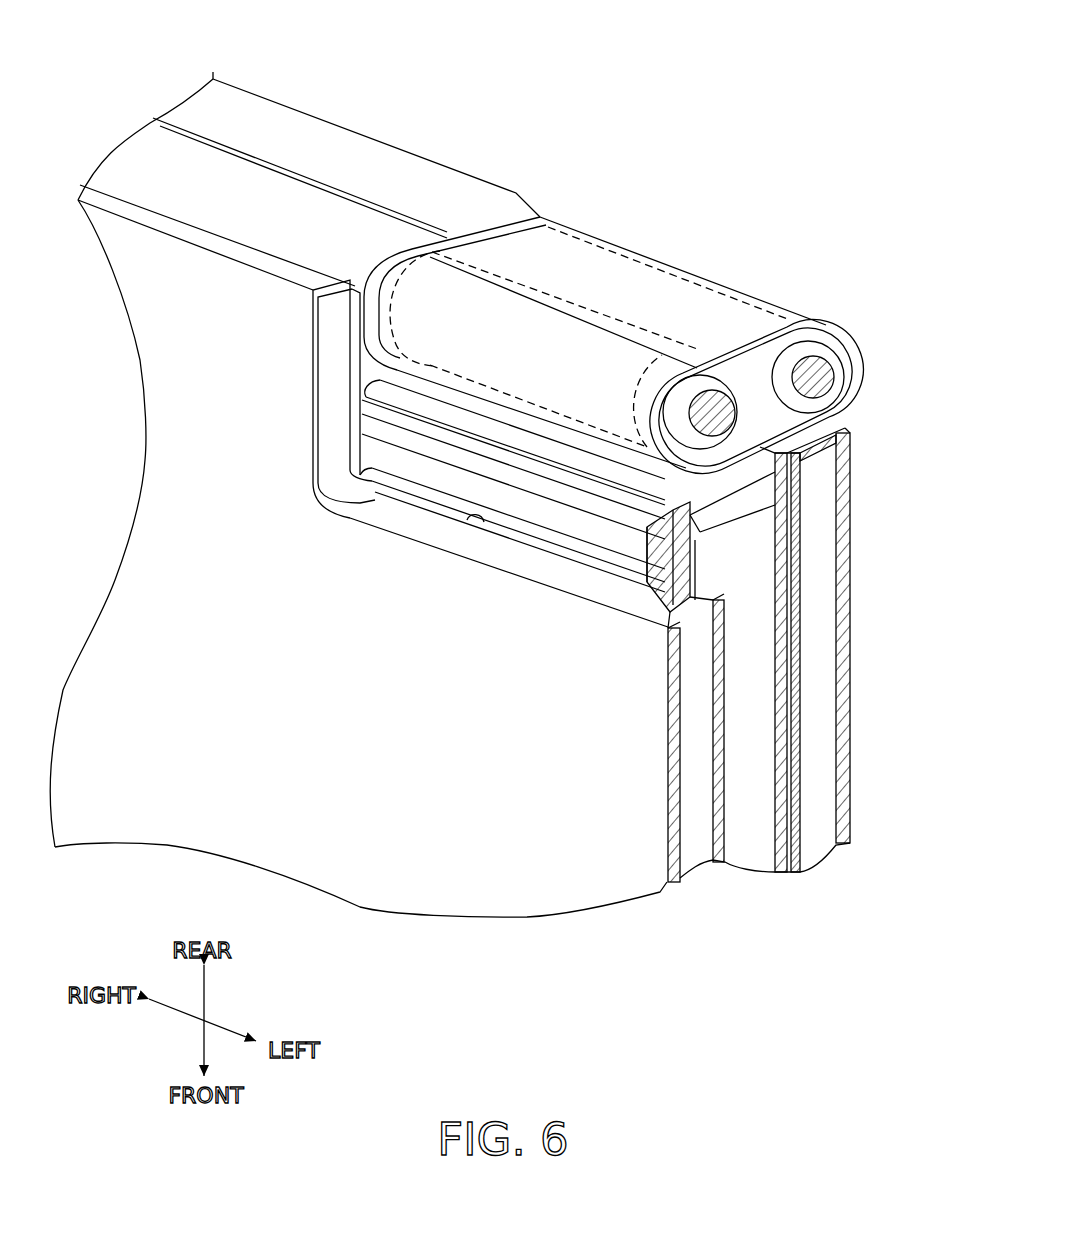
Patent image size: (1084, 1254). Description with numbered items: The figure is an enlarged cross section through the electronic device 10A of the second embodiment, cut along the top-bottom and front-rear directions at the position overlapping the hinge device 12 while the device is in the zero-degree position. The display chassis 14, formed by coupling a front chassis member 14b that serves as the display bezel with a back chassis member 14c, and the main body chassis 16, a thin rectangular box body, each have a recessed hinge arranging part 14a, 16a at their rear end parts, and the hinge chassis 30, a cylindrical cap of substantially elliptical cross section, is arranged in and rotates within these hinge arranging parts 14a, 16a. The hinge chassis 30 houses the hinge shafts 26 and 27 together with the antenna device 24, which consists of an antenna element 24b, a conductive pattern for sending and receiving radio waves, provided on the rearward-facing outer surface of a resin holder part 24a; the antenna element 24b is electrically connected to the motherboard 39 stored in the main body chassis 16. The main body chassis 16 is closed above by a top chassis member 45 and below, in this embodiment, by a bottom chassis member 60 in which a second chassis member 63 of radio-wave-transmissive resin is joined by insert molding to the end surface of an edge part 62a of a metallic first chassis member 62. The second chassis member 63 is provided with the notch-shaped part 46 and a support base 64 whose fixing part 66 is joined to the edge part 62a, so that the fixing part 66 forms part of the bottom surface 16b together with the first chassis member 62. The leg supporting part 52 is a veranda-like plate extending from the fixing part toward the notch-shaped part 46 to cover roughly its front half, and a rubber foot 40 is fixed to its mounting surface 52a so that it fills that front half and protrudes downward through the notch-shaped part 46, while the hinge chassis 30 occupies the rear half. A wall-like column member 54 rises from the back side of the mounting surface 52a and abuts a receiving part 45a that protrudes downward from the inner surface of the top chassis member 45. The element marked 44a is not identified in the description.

The electronic device 10A is at (50, 38).
The display chassis 14 is at (213, 112).
The main body chassis 16 is at (137, 152).
The panel joint seam 44a is at (230, 250).
The hinge chassis 30 is at (550, 258).
The antenna device 24 is at (610, 280).
The holder part 24a is at (680, 184).
The antenna element 24b is at (662, 302).
The hinge device 12 is at (745, 252).
The hinge shaft 26 is at (713, 417).
The hinge shaft 27 is at (820, 377).
The hinge arranging part 14a is at (747, 437).
The hinge arranging part 16a is at (750, 492).
The receiving part 45a is at (743, 513).
The column member 54 is at (700, 570).
The support base 64 is at (690, 633).
The second chassis member 63 is at (720, 605).
The first chassis member 62 is at (683, 743).
The bottom chassis member 60 is at (915, 648).
The back chassis member 14c is at (843, 733).
The front chassis member 14b is at (797, 762).
The top chassis member 45 is at (783, 805).
The motherboard 39 is at (723, 807).
The bottom surface 16b is at (413, 883).
The fixing part 66 is at (500, 580).
The mounting surface 52a is at (647, 580).
The leg supporting part 52 is at (660, 613).
The rubber foot 40 is at (427, 478).
The notch-shaped part 46 is at (467, 517).
The edge part 62a is at (333, 487).